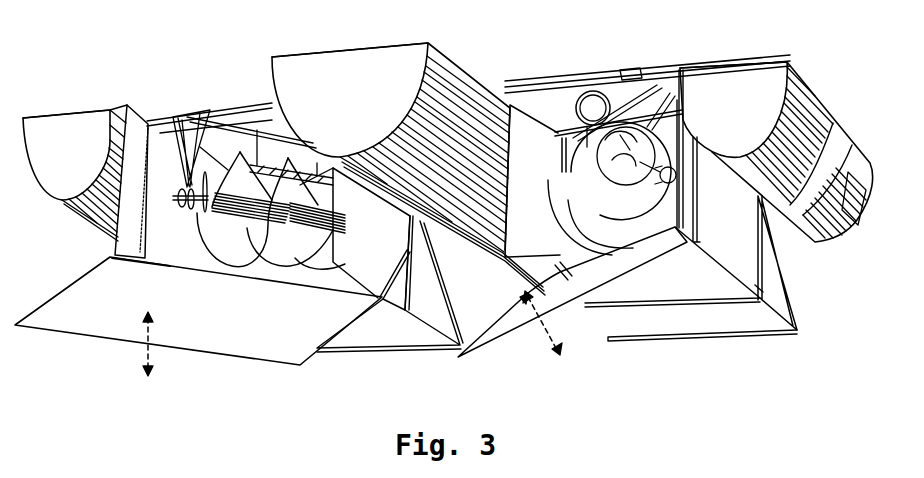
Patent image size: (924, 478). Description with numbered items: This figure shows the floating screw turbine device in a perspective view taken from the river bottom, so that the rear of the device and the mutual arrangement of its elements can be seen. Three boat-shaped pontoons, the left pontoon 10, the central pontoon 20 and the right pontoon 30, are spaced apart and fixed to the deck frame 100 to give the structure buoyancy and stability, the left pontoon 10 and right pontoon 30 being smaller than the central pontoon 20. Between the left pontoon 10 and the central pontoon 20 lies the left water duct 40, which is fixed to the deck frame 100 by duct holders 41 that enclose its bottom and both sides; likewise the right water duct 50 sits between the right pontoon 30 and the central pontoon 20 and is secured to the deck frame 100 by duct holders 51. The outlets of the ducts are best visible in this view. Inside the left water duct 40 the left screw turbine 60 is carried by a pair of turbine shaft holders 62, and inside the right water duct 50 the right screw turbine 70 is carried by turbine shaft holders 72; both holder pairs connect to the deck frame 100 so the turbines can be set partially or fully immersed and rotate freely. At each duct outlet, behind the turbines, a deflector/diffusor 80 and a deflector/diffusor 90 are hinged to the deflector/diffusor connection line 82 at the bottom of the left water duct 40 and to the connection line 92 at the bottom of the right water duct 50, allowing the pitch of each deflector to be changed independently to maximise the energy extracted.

The left pontoon 10 is at (828, 127).
The central pontoon 20 is at (316, 66).
The right pontoon 30 is at (50, 132).
The left water duct 40 is at (518, 139).
The duct holders 41 is at (700, 192).
The right water duct 50 is at (132, 135).
The duct holders 51 is at (453, 300).
The left screw turbine 60 is at (588, 198).
The turbine shaft holders 62 is at (638, 93).
The right screw turbine 70 is at (218, 226).
The turbine shaft holders 72 is at (173, 127).
The deflector/diffusor 80 is at (563, 298).
The deflector/diffusor connection line 82 is at (562, 277).
The deflector/diffusor 90 is at (275, 343).
The deflector/diffusor connection line 92 is at (167, 265).
The deck frame 100 is at (543, 87).